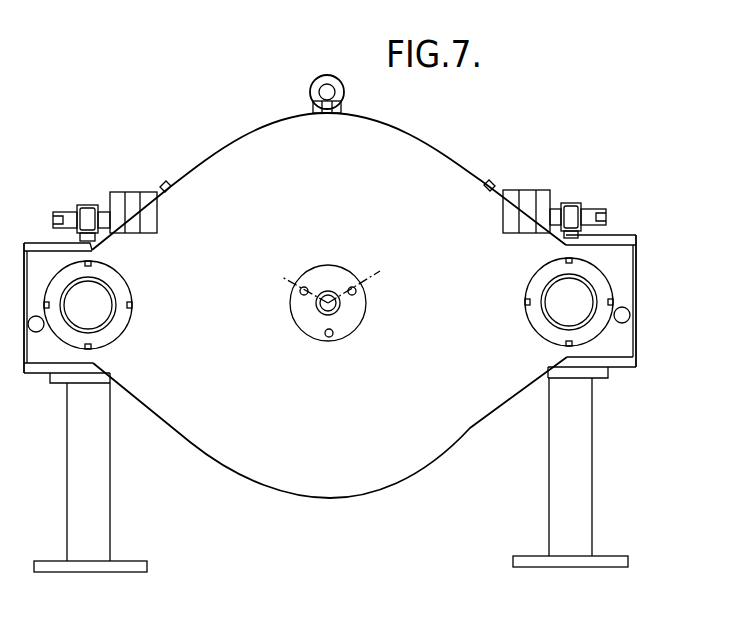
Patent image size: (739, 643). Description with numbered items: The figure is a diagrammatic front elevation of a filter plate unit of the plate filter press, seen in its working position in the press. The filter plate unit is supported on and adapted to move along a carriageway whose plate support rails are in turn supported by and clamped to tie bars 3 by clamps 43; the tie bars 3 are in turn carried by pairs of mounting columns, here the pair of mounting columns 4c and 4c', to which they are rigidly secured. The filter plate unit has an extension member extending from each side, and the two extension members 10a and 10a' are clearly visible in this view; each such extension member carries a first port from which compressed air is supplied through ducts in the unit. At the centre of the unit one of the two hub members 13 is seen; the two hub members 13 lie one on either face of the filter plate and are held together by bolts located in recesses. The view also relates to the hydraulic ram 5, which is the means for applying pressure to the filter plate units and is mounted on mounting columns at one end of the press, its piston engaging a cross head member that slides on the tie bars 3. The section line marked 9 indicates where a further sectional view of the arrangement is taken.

The bearing shaft 3 is at (84, 322).
The support leg 4c is at (570, 472).
The support leg 4c' is at (94, 477).
The section line 5- 5 is at (230, 247).
The section line 9- 9 is at (53, 222).
The connector 10a is at (563, 195).
The connector 10a' is at (105, 189).
The central hub 13 is at (320, 337).
The bearing ring 43 is at (125, 322).